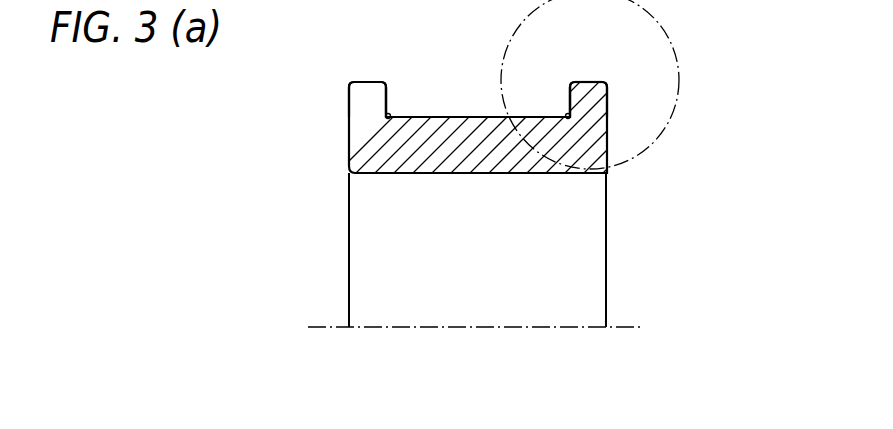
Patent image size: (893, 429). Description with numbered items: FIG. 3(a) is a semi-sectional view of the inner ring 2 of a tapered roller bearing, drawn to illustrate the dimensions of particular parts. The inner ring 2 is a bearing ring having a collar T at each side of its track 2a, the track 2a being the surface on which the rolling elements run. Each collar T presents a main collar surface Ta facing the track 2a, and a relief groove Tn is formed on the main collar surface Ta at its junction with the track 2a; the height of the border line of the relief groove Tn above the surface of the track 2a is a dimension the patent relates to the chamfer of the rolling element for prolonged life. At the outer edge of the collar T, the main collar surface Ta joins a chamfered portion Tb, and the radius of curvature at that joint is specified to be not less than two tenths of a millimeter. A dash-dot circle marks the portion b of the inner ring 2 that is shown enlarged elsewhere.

The inner ring 2 is at (583, 143).
The track 2a is at (474, 116).
The collar T is at (349, 84).
The main collar surface Ta is at (387, 83).
The chamfered portion Tb is at (572, 83).
The relief groove Tn is at (389, 116).
The portion b is at (676, 57).